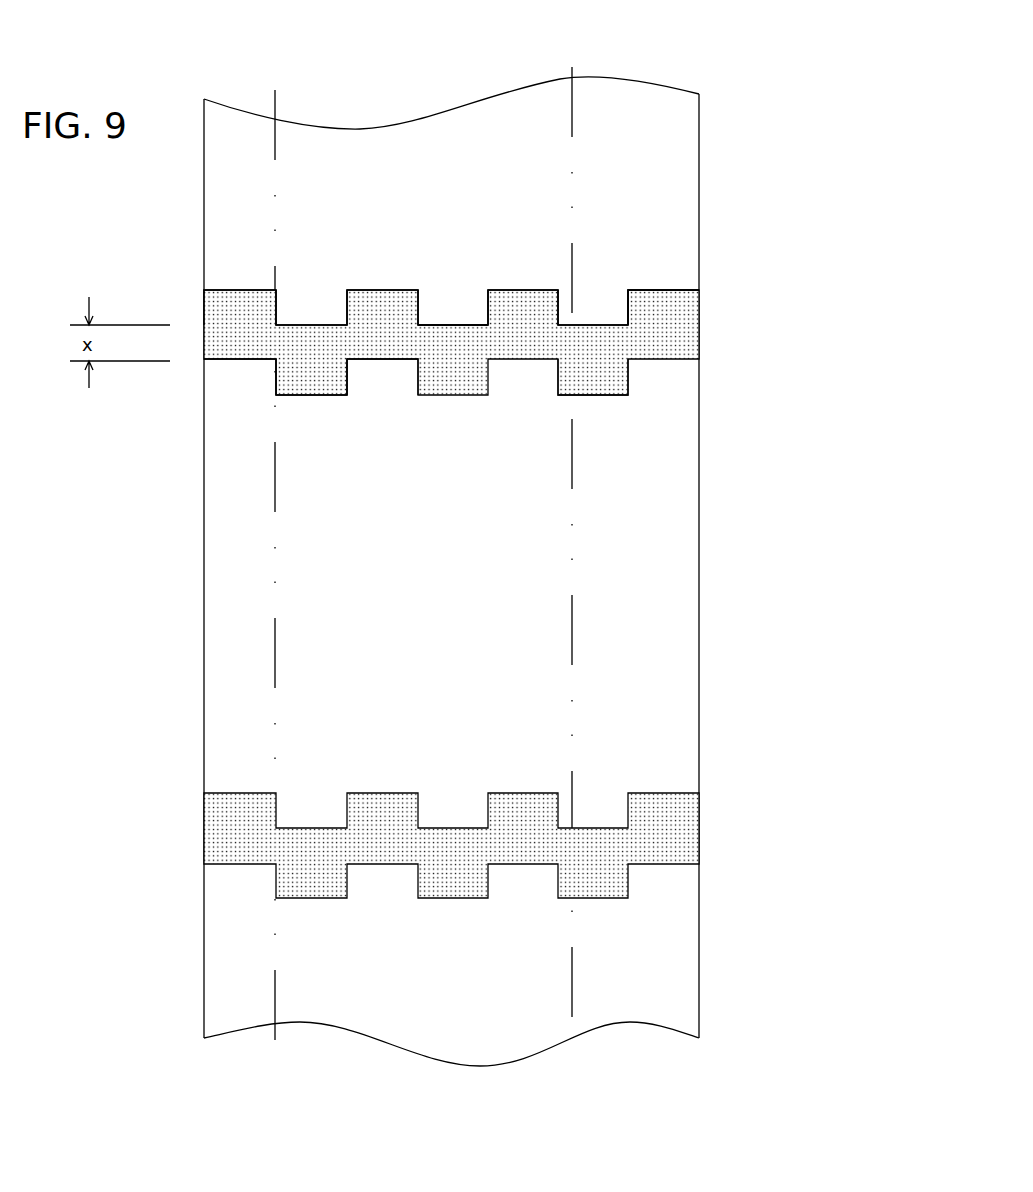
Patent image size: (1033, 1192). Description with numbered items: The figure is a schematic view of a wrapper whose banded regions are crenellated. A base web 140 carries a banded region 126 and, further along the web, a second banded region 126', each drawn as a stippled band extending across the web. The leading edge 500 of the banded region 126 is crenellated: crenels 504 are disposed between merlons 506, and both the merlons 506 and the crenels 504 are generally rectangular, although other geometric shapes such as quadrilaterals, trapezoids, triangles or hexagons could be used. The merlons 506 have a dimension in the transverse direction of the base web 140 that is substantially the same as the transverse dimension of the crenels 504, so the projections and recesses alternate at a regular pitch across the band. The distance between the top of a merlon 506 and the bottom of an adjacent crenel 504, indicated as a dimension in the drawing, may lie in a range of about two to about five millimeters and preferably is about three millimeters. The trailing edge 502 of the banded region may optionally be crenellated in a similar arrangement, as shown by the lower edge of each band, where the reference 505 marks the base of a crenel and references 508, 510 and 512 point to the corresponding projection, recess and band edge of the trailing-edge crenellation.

The banded region 126 is at (521, 342).
The banded region 126' is at (544, 845).
The base web 140 is at (637, 485).
The leading edge 500 is at (670, 288).
The trailing edge 502 is at (612, 397).
The crenel 504 is at (317, 310).
The base of notch 505 is at (436, 325).
The merlon 506 is at (385, 312).
The lower tab 508 is at (313, 372).
The lower notch 510 is at (241, 373).
The lower band edge 512 is at (385, 362).